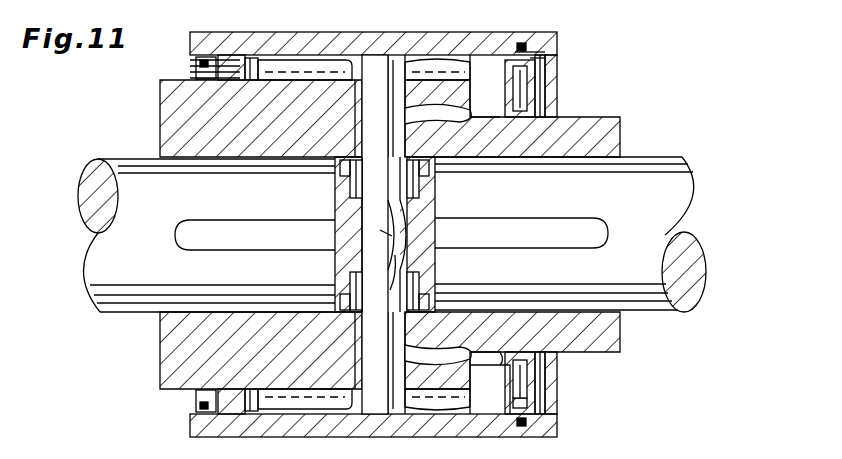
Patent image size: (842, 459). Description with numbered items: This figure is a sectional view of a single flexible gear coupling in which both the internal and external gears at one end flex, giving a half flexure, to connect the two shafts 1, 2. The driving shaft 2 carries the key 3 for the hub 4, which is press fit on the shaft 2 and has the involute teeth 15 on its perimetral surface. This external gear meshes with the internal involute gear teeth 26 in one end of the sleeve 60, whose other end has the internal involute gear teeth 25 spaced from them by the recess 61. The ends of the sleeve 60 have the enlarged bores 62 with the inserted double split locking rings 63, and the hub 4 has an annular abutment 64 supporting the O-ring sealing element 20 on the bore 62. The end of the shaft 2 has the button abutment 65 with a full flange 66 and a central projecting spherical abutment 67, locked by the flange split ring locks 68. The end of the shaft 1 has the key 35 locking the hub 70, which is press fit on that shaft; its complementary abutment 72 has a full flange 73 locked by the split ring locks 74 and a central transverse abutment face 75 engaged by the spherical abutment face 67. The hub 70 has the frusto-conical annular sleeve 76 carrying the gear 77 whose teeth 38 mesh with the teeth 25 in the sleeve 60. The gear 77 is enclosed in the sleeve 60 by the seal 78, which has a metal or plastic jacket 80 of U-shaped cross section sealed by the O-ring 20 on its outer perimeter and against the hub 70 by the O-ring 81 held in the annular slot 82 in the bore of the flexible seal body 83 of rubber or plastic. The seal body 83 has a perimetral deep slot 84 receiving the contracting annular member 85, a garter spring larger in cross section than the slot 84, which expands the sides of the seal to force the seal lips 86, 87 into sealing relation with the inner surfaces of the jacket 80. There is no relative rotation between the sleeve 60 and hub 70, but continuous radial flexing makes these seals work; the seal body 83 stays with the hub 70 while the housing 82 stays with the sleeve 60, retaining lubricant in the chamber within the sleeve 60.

The shaft 1 is at (692, 196).
The driving shaft 2 is at (128, 180).
The key 3 is at (187, 232).
The hub 4 is at (163, 103).
The involute teeth 15 is at (295, 65).
The O-ring sealing element 20 is at (222, 58).
The internal involute gear teeth 25 is at (398, 60).
The internal involute gear teeth 26 is at (254, 62).
The key 35 is at (597, 232).
The teeth 38 is at (440, 62).
The sleeve 60 is at (338, 58).
The recess 61 is at (376, 58).
The enlarged bores 62 is at (192, 72).
The double split locking rings 63 is at (192, 60).
The annular abutment 64 is at (234, 50).
The button abutment 65 is at (352, 256).
The full flange 66 is at (348, 183).
The spherical abutment 67 is at (392, 235).
The flange split ring locks 68 is at (346, 200).
The hub 70 is at (612, 137).
The complementary abutment 72 is at (428, 213).
The full flange 73 is at (422, 184).
The split ring locks 74 is at (415, 163).
The transverse abutment face 75 is at (406, 258).
The annular sleeve 76 is at (475, 120).
The gear 77 is at (437, 95).
The seal 78 is at (562, 456).
The jacket 80 is at (530, 92).
The O-ring 81 is at (540, 374).
The annular slot 82 is at (536, 360).
The flexible seal body 83 is at (520, 368).
The perimetral deep slot 84 is at (542, 382).
The contracting annular member 85 is at (524, 400).
The seal lip 86 is at (525, 392).
The seal lip 87 is at (540, 394).